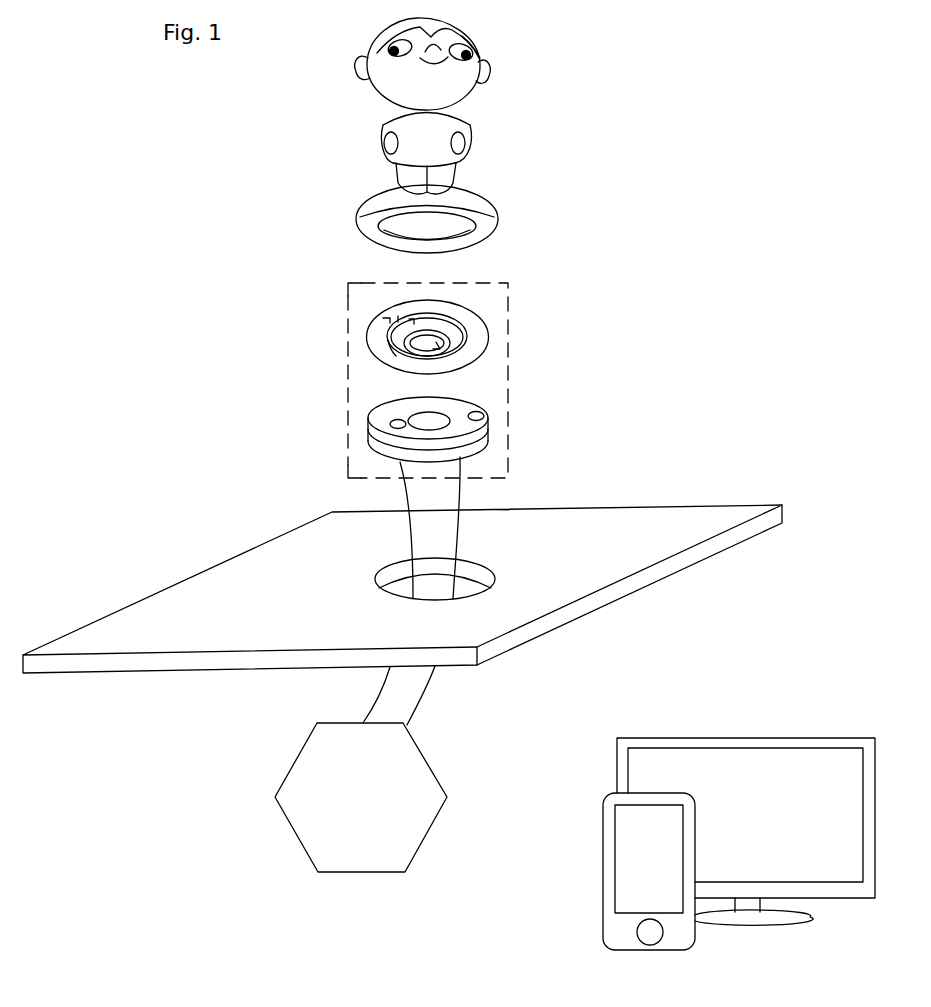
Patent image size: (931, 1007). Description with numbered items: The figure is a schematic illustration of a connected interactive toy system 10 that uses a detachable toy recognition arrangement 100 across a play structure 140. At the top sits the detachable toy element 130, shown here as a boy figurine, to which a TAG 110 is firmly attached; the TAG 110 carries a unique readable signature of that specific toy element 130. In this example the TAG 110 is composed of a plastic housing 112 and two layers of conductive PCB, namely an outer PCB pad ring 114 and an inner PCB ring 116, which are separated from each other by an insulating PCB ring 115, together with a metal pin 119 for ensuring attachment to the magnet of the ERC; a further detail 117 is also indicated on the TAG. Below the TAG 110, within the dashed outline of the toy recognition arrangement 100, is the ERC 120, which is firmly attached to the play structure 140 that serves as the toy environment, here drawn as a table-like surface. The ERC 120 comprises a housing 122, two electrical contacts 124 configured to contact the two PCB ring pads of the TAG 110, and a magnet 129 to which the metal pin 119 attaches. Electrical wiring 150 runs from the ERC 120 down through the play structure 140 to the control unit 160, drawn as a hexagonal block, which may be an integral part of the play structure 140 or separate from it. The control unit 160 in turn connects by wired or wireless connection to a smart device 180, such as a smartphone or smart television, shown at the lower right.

The connected interactive toy system 10 is at (199, 198).
The toy recognition arrangement 100 is at (348, 360).
The TAG 110 is at (286, 329).
The plastic housing 112 is at (485, 321).
The outer PCB pad ring 114 is at (462, 365).
The insulating PCB ring 115 is at (387, 347).
The inner PCB ring 116 is at (452, 333).
The contacts 117 is at (418, 320).
The metal pin 119 is at (437, 348).
The ERC 120 is at (286, 432).
The housing 122 is at (482, 425).
The electrical contacts 124 is at (487, 415).
The magnet 129 is at (422, 420).
The detachable toy element 130 is at (378, 107).
The play structure 140 is at (700, 562).
The electrical wiring 150 is at (408, 490).
The control unit 160 is at (280, 789).
The smart device 180 is at (603, 872).